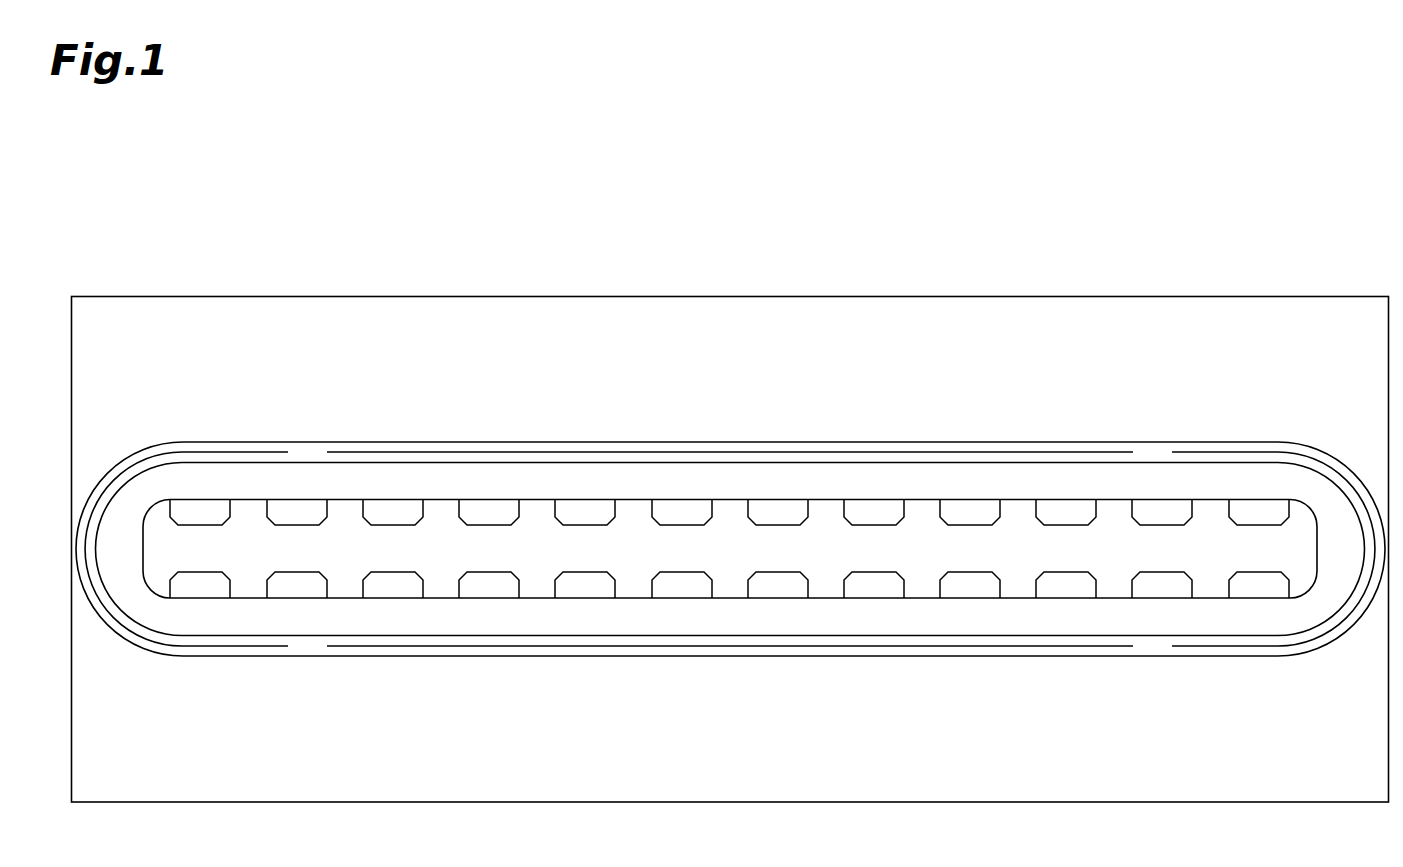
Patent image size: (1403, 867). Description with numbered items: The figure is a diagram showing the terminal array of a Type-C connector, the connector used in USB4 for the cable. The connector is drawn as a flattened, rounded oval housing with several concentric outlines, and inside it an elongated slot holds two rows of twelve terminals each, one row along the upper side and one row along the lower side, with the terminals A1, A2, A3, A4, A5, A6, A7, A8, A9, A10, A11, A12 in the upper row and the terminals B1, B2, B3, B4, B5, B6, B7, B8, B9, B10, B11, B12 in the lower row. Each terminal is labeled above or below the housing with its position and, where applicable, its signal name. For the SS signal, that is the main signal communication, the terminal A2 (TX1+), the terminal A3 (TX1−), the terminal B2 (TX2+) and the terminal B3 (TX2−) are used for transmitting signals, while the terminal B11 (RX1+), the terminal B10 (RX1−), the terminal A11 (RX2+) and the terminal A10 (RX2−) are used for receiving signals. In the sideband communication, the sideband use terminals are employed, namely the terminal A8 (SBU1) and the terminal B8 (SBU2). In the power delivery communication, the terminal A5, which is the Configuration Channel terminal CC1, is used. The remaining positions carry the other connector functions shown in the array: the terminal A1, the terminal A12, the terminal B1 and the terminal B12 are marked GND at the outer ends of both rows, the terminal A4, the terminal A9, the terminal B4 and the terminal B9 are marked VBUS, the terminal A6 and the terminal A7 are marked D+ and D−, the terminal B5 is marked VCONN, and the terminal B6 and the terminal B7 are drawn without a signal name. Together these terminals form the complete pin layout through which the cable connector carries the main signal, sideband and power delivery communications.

The terminal A1 is at (1261, 512).
The terminal A2 (TX1+) A2 is at (1164, 512).
The terminal A3 (TX1−) A3 is at (1068, 512).
The terminal A4 is at (972, 512).
The terminal A5 (CC1) A5 is at (876, 512).
The terminal A6 is at (780, 512).
The terminal A7 is at (684, 512).
The terminal A8 (SBU1) A8 is at (587, 512).
The terminal A9 is at (491, 512).
The terminal A10 (RX2−) A10 is at (395, 512).
The terminal A11 (RX2+) A11 is at (299, 512).
The terminal A12 is at (202, 512).
The terminal B1 is at (202, 588).
The terminal B2 (TX2+) B2 is at (299, 588).
The terminal B3 (TX2−) B3 is at (395, 588).
The terminal B4 is at (491, 588).
The terminal B5 is at (587, 588).
The terminal B6 is at (684, 588).
The terminal B7 is at (780, 588).
The terminal B8 (SBU2) B8 is at (876, 588).
The terminal B9 is at (972, 588).
The terminal B10 (RX1−) B10 is at (1068, 588).
The terminal B11 (RX1+) B11 is at (1164, 588).
The terminal B12 is at (1261, 588).